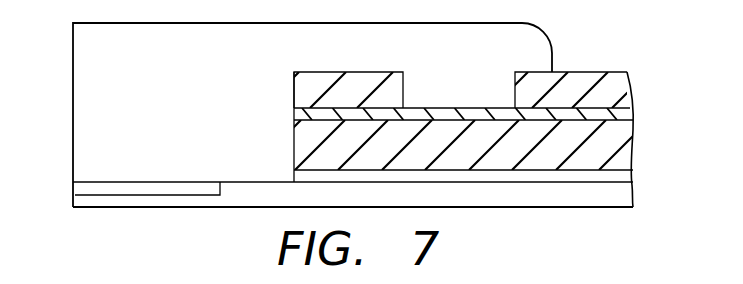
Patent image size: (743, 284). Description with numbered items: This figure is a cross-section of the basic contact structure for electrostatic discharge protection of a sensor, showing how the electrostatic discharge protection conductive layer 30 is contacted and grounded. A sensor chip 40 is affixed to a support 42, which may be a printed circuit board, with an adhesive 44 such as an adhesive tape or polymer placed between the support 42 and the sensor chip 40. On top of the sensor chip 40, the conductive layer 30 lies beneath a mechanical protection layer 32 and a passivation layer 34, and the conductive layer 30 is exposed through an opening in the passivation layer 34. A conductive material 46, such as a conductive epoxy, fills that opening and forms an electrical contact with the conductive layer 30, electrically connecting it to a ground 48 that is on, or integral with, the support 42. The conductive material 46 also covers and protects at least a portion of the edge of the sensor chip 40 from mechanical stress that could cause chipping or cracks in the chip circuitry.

The conductive layer 30 is at (629, 116).
The mechanical protection layer 32 is at (403, 93).
The passivation layer 34 is at (622, 90).
The sensor chip 40 is at (629, 145).
The support 42 is at (575, 208).
The adhesive 44 is at (628, 177).
The conductive material 46 is at (198, 115).
The ground 48 is at (75, 189).